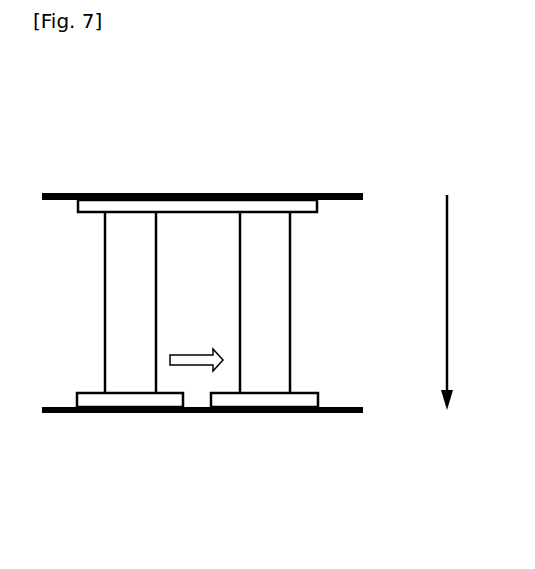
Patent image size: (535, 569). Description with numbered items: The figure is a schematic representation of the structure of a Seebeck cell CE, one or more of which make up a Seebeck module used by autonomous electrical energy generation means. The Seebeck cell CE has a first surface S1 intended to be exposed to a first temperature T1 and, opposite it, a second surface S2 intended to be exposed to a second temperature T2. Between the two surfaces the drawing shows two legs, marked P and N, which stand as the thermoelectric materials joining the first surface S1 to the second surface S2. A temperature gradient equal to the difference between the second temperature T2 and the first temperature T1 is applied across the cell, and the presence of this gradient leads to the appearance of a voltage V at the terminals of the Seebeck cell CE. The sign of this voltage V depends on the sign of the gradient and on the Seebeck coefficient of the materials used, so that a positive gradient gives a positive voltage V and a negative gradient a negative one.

The Seebeck cell CE is at (230, 304).
The first surface S1 is at (213, 193).
The second surface S2 is at (203, 413).
The P-type semiconductor P is at (130, 302).
The N-type semiconductor N is at (265, 302).
The voltage V is at (196, 345).
The first temperature T1 is at (230, 196).
The second temperature T2 is at (230, 409).